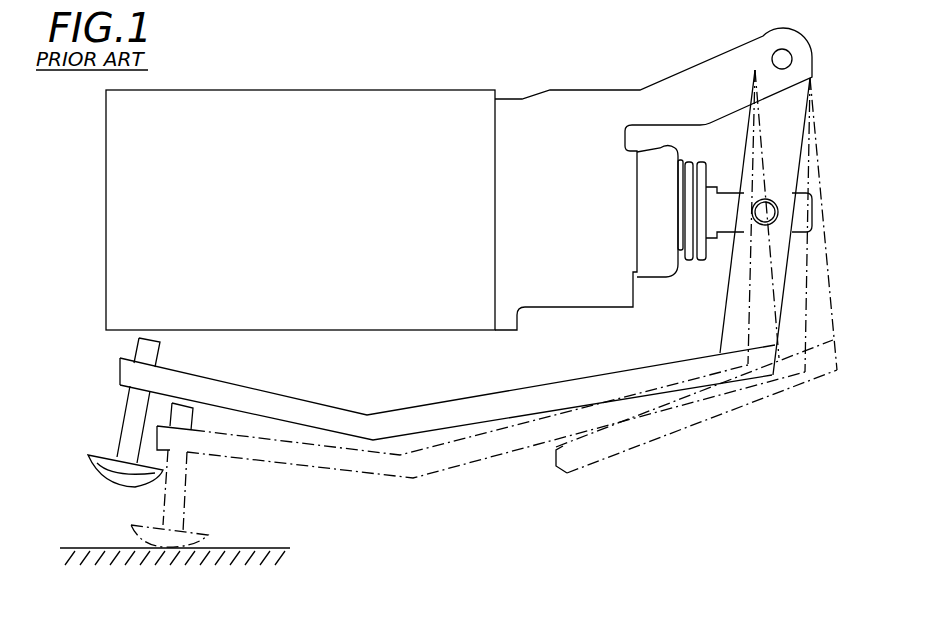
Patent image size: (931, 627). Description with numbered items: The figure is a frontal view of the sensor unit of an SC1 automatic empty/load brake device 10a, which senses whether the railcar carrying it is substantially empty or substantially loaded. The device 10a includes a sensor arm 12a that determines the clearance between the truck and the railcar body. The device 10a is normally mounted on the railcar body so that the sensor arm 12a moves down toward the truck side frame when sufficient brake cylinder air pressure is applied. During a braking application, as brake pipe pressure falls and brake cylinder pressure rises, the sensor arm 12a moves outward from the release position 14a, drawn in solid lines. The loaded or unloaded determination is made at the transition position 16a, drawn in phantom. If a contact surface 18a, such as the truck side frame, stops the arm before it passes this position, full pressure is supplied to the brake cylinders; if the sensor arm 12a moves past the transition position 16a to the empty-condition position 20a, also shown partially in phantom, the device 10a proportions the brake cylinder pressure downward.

The automatic empty/load brake device 10a is at (581, 66).
The sensor arm 12a is at (120, 361).
The release position 14a is at (412, 415).
The transition position 16a is at (462, 456).
The contact surface 18a is at (213, 557).
The empty-condition position 20a is at (630, 440).